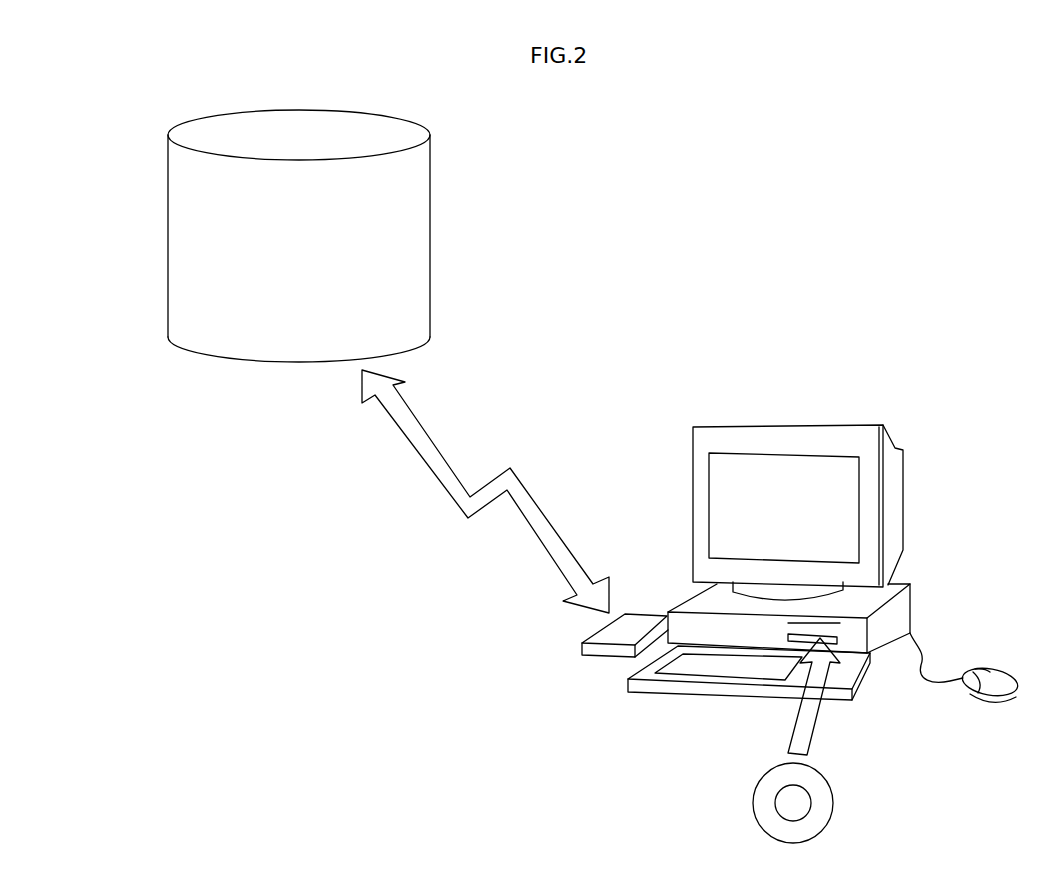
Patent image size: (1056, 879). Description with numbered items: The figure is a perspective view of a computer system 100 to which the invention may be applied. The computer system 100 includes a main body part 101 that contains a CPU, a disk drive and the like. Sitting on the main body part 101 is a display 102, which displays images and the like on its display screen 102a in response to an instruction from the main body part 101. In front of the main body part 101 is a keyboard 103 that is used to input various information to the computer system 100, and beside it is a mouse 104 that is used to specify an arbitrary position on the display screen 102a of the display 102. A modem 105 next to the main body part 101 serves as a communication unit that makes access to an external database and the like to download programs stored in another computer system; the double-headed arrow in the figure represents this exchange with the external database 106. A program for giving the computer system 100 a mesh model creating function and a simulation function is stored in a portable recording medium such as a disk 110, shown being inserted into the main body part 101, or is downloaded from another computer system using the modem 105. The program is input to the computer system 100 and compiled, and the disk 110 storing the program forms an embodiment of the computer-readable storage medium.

The computer system 100 is at (821, 371).
The main body part 101 is at (915, 600).
The display 102 is at (798, 491).
The display screen 102a is at (732, 467).
The keyboard 103 is at (652, 695).
The mouse 104 is at (990, 705).
The modem 105 is at (582, 644).
The database / storage 106 is at (243, 127).
The disk 110 is at (833, 797).